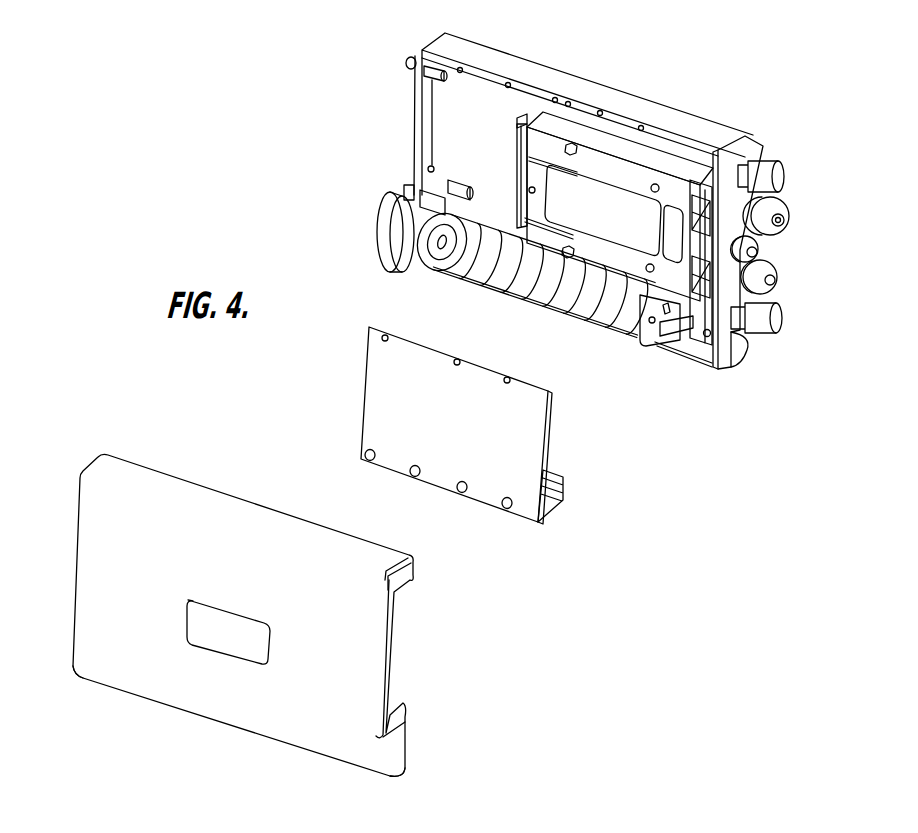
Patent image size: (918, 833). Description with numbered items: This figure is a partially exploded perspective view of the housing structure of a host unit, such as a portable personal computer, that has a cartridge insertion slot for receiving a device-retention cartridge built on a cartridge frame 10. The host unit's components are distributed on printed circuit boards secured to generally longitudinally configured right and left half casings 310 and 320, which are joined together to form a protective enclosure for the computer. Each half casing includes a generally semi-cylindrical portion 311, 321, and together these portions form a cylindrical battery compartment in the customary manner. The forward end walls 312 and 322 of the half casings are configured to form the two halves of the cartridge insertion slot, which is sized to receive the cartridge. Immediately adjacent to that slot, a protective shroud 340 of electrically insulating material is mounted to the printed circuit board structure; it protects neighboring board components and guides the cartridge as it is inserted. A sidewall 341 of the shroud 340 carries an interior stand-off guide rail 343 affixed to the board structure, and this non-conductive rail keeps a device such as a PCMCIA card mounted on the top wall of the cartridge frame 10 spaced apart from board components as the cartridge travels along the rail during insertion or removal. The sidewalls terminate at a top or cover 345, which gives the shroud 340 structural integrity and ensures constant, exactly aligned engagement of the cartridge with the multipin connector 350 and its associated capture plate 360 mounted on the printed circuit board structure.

The cartridge frame 10 is at (628, 147).
The right half casing 310 is at (587, 77).
The semi-cylindrical portion 311 is at (603, 318).
The forward end wall 312 is at (736, 347).
The left half casing 320 is at (245, 585).
The semi-cylindrical portion 321 is at (70, 655).
The forward end wall 322 is at (392, 752).
The protective shroud 340 is at (463, 452).
The sidewall 341 is at (545, 522).
The stand-off guide rail 343 is at (560, 501).
The top or cover 345 is at (383, 380).
The multipin connector 350 is at (524, 117).
The capture plate 360 is at (517, 147).